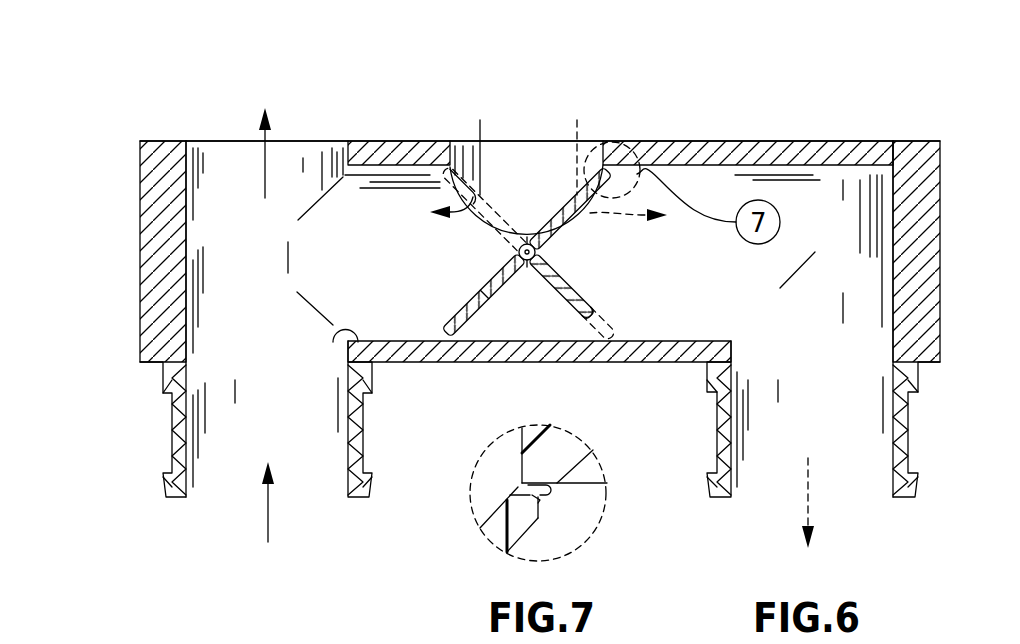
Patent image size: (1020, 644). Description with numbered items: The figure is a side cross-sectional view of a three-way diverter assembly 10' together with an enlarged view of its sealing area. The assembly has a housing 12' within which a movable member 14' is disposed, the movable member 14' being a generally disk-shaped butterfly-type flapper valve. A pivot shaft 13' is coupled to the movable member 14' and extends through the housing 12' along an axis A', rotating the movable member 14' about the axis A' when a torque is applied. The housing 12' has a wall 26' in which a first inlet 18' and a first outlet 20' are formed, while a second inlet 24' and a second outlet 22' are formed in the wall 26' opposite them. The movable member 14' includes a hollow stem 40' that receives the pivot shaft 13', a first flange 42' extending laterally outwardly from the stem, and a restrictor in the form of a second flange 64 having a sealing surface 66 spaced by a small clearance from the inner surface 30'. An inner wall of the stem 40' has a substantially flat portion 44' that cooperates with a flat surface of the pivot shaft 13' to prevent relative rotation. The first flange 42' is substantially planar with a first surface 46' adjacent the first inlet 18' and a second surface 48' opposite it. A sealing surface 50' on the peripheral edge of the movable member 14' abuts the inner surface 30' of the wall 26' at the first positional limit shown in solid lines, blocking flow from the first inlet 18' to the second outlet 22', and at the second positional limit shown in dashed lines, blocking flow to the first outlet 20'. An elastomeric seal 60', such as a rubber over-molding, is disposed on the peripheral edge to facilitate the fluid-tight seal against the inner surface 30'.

In FIG. 6, the three-way diverter assembly 10' is at (505, 254).
In FIG. 6, the housing 12' is at (134, 251).
In FIG. 6, the pivot shaft 13' is at (526, 156).
In FIG. 6, the movable member 14' is at (577, 227).
In FIG. 6, the first inlet 18' is at (504, 108).
In FIG. 6, the first outlet 20' is at (267, 82).
In FIG. 6, the second outlet 22' is at (824, 482).
In FIG. 6, the second inlet 24' is at (272, 481).
In FIG. 6, the wall 26' is at (771, 197).
In FIG. 6, the inner surface 30' is at (322, 369).
In FIG. 6, the hollow stem 40' is at (483, 150).
In FIG. 6, the first flange 42' is at (595, 203).
In FIG. 6, the substantially flat portion 44' is at (565, 329).
In FIG. 6, the first surface 46' is at (473, 281).
In FIG. 6, the second surface 48' is at (500, 348).
In FIG. 7, the sealing surface 50' is at (486, 459).
In FIG. 7, the elastomeric seal 60' is at (604, 538).
In FIG. 6, the second flange 64 is at (593, 311).
In FIG. 6, the sealing surface 66 is at (612, 333).
In FIG. 6, the axis A' is at (532, 208).